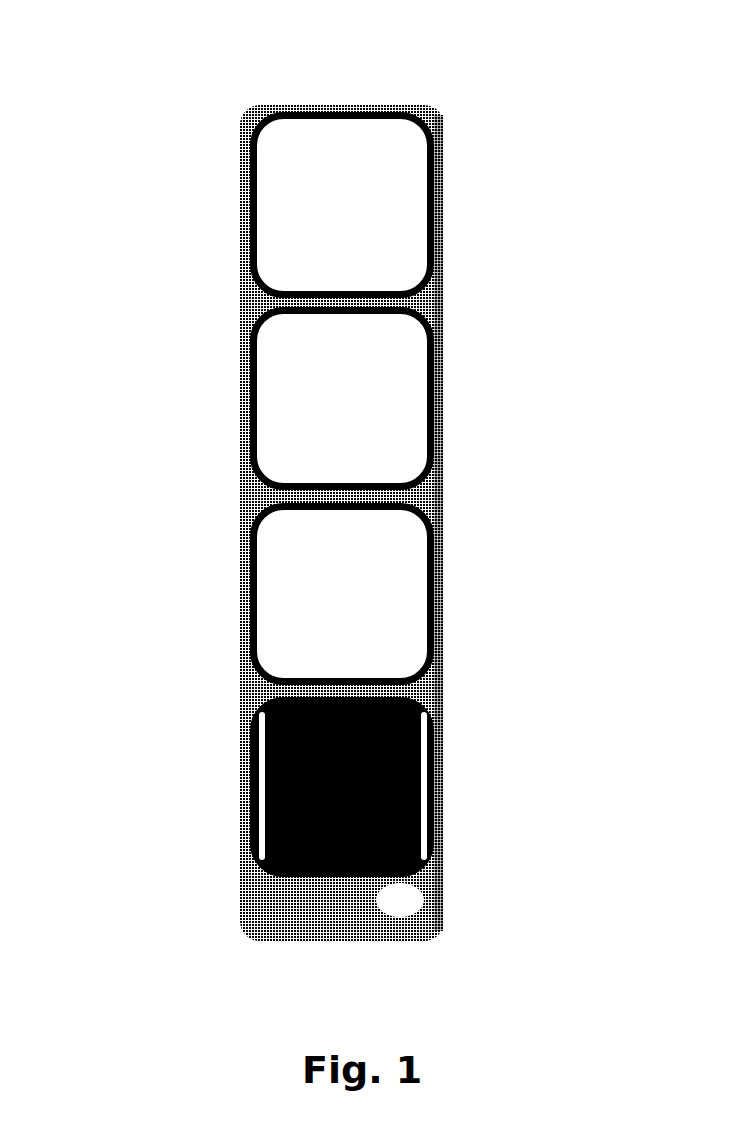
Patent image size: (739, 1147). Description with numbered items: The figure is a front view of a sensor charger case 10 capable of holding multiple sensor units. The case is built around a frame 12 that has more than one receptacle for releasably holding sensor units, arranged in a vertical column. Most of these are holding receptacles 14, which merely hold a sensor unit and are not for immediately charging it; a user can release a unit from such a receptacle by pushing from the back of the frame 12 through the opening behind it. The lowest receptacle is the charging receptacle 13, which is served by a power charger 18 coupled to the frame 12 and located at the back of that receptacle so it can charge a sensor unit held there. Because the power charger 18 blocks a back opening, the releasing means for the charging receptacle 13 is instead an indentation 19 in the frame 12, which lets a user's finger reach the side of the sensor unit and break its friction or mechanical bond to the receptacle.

The sensor charger case 10 is at (166, 66).
The frame 12 is at (441, 218).
The holding receptacle 14 is at (288, 406).
The charging receptacle 13 is at (285, 770).
The power charger 18 is at (400, 767).
The indentation 19 is at (358, 914).